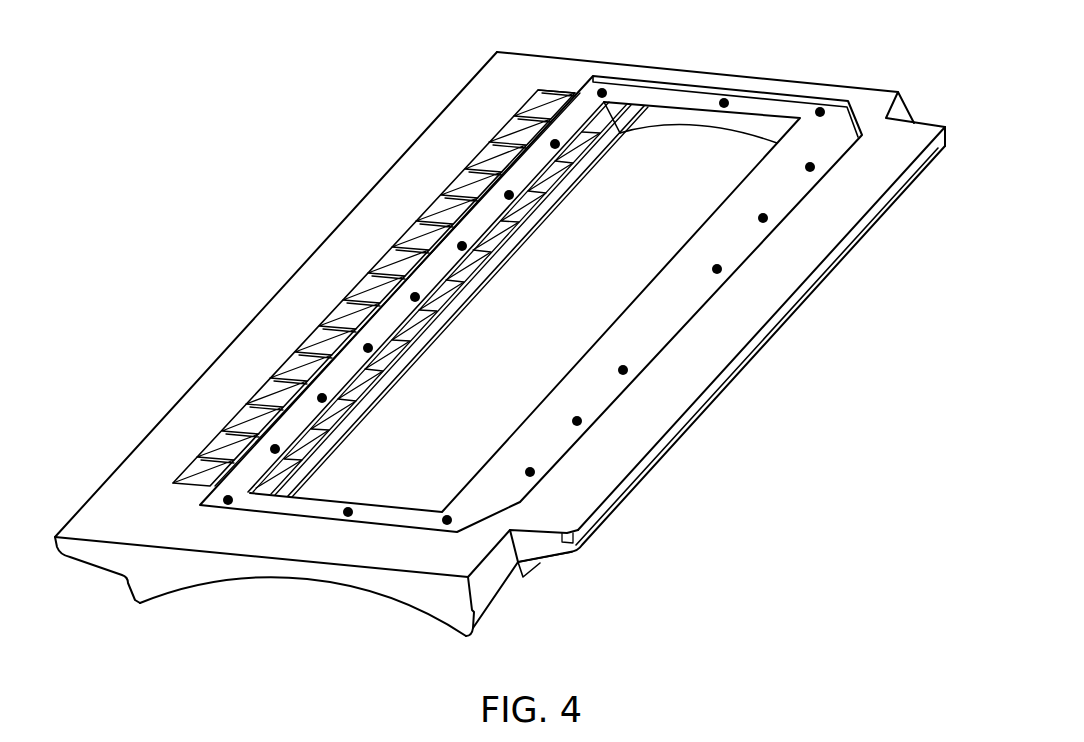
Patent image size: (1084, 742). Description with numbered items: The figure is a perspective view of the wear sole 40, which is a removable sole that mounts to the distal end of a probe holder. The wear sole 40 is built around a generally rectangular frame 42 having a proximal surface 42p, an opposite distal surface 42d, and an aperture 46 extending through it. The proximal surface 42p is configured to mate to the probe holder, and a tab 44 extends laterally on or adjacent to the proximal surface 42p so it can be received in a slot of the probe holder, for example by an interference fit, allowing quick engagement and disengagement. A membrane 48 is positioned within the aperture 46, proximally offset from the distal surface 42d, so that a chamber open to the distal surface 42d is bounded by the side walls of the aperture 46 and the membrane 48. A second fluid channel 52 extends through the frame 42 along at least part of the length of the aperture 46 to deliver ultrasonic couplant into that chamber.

The wear sole 40 is at (295, 194).
The frame 42 is at (500, 386).
The proximal surface 42p is at (487, 90).
The distal surface 42d is at (262, 578).
The tab 44 is at (745, 322).
The aperture 46 is at (645, 77).
The membrane 48 is at (556, 313).
The second fluid channel 52 is at (445, 205).